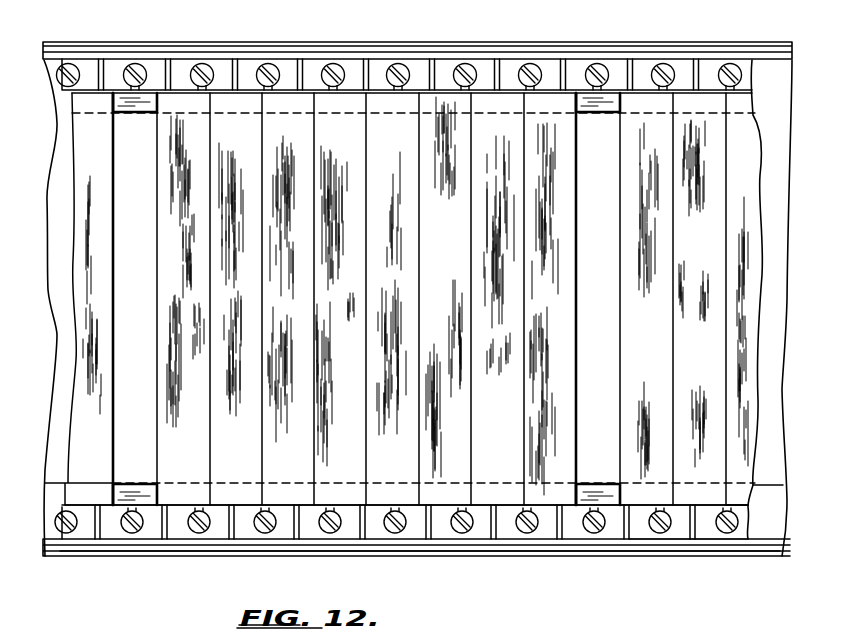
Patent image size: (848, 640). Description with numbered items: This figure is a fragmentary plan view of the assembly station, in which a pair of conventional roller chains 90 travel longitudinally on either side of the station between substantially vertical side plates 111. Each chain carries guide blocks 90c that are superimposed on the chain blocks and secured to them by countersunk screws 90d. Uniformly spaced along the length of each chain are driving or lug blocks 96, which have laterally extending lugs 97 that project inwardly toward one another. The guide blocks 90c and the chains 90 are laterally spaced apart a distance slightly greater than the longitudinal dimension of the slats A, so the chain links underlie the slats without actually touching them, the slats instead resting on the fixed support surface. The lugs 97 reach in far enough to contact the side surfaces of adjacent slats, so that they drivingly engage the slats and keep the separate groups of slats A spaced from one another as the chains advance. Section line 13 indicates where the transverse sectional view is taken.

The chains 90 is at (560, 545).
The guide blocks 90c is at (642, 535).
The countersunk screws 90d is at (714, 518).
The driving or lug blocks 96 is at (618, 65).
The lugs 97 is at (598, 112).
The side plates 111 is at (436, 548).
The section line 13- 13 is at (39, 282).
The slats A is at (625, 251).